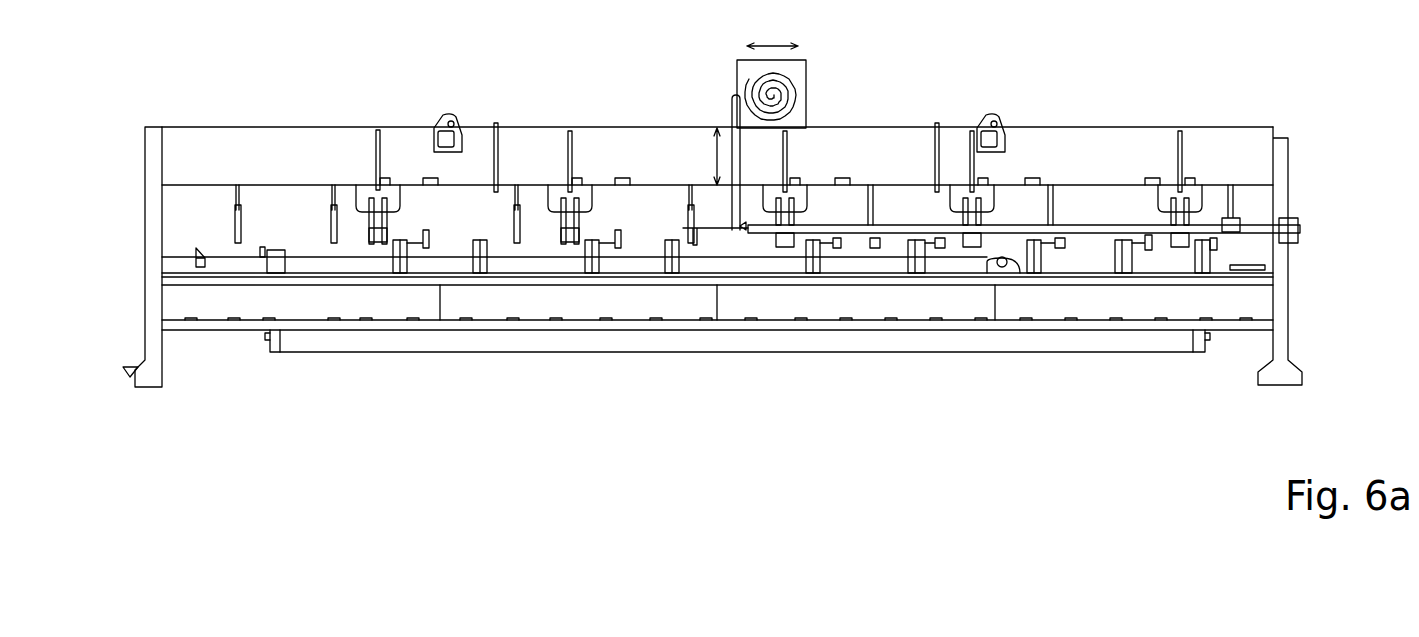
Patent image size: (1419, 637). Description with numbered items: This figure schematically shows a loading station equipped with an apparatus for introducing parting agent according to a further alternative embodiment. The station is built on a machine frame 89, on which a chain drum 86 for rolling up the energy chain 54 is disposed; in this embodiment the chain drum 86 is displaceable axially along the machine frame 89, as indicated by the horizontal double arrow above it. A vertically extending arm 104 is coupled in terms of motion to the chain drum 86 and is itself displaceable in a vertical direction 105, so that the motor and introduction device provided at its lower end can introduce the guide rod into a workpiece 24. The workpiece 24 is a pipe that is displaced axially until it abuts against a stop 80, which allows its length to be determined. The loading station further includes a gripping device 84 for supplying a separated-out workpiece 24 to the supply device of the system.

The workpiece 24 is at (1077, 225).
The energy chain 54 is at (737, 90).
The stop 80 is at (1300, 233).
The gripping device 84 is at (305, 145).
The chain drum 86 is at (796, 78).
The machine frame 89 is at (152, 204).
The vertical arm 104 is at (733, 212).
The vertical direction 105 is at (713, 157).